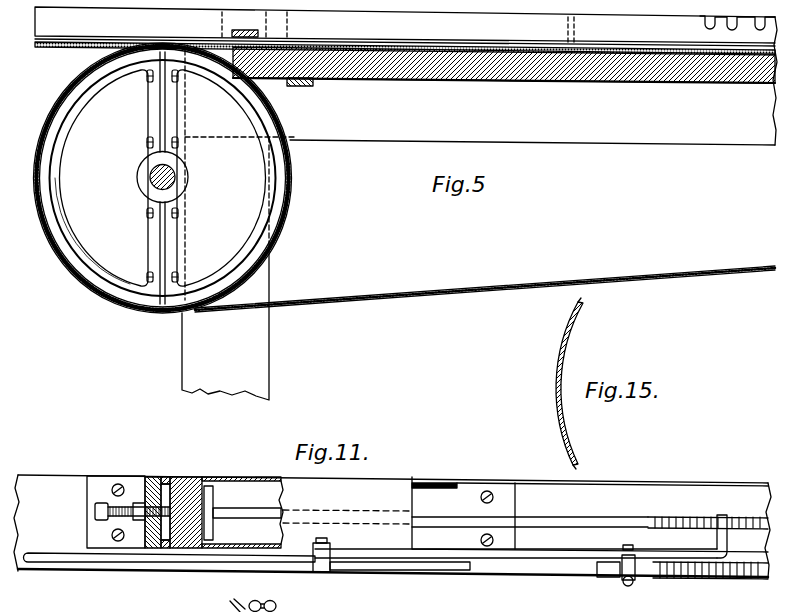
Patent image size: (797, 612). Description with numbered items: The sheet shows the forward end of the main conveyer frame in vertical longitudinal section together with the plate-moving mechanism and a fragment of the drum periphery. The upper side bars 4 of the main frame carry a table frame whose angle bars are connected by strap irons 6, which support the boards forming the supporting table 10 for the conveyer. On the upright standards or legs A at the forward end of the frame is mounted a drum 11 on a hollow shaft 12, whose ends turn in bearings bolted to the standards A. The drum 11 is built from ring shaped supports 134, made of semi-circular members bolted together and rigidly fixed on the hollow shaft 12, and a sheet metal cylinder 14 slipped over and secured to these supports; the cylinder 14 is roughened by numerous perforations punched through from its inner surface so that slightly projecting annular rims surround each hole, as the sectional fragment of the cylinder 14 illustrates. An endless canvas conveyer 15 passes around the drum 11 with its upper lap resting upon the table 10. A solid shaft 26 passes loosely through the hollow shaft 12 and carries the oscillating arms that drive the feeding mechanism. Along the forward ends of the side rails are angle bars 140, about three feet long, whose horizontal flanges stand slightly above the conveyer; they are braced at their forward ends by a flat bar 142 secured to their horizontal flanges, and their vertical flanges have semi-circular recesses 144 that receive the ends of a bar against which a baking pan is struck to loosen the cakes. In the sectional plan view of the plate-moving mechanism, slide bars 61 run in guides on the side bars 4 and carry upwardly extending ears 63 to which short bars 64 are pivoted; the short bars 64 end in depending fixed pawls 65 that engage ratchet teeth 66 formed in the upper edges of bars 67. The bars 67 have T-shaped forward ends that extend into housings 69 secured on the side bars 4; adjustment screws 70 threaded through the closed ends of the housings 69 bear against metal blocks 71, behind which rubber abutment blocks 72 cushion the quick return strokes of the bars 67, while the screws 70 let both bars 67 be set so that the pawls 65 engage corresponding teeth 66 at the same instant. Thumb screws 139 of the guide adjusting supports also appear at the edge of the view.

In FIG. 5, the upper side bars 4 is at (478, 127).
In FIG. 11, the upper side bars 4 is at (46, 480).
In FIG. 5, the strap irons 6 is at (312, 86).
In FIG. 5, the supporting table 10 is at (672, 84).
In FIG. 5, the drum 11 is at (93, 129).
In FIG. 5, the hollow shaft 12 is at (150, 172).
In FIG. 5, the sheet metal cylinder 14 is at (62, 203).
In FIG. 15, the sheet metal cylinder 14 is at (557, 360).
In FIG. 5, the endless canvas conveyer 15 is at (357, 302).
In FIG. 5, the solid shaft 26 is at (178, 178).
In FIG. 5, the ring shaped supports 134 is at (88, 272).
In FIG. 5, the angle bars 140 is at (170, 26).
In FIG. 5, the flat bar 142 is at (235, 32).
In FIG. 5, the semi-circular recesses 144 is at (704, 24).
In FIG. 5, the upright standards A is at (255, 353).
In FIG. 11, the slide bars 61 is at (93, 563).
In FIG. 11, the upwardly extending ears 63 is at (331, 572).
In FIG. 11, the short bars 64 is at (568, 558).
In FIG. 11, the depending fixed pawls 65 is at (730, 542).
In FIG. 11, the ratchet teeth 66 is at (694, 518).
In FIG. 11, the bars 67 is at (545, 520).
In FIG. 11, the housings 69 is at (248, 480).
In FIG. 11, the adjustment screws 70 is at (112, 515).
In FIG. 11, the metal blocks 71 is at (176, 477).
In FIG. 11, the rubber abutment blocks 72 is at (192, 548).
In FIG. 11, the thumb screws 139 is at (268, 601).